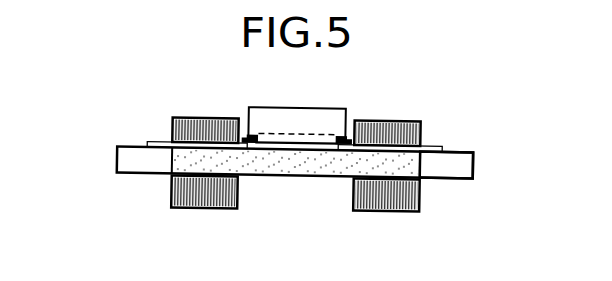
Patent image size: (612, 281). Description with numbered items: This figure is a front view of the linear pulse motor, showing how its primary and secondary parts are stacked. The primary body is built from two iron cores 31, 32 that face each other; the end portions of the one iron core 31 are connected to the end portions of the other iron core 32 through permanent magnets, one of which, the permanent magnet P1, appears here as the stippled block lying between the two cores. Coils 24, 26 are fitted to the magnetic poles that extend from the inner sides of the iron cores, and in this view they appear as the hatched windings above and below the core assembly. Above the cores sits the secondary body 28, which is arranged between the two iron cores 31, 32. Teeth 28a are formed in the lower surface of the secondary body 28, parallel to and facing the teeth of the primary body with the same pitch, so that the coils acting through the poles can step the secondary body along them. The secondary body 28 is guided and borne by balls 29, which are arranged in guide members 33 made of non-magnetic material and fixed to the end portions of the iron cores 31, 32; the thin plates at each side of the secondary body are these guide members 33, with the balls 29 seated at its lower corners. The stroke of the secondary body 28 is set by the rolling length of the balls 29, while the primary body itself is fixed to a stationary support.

The coil 24 is at (380, 122).
The coil 26 is at (195, 121).
The secondary body 28 is at (273, 122).
The teeth 28a is at (309, 134).
The ball 29 is at (256, 143).
The iron core 31 is at (447, 167).
The iron core 32 is at (135, 160).
The guide member 33 is at (162, 142).
The permanent magnet P1 is at (291, 161).